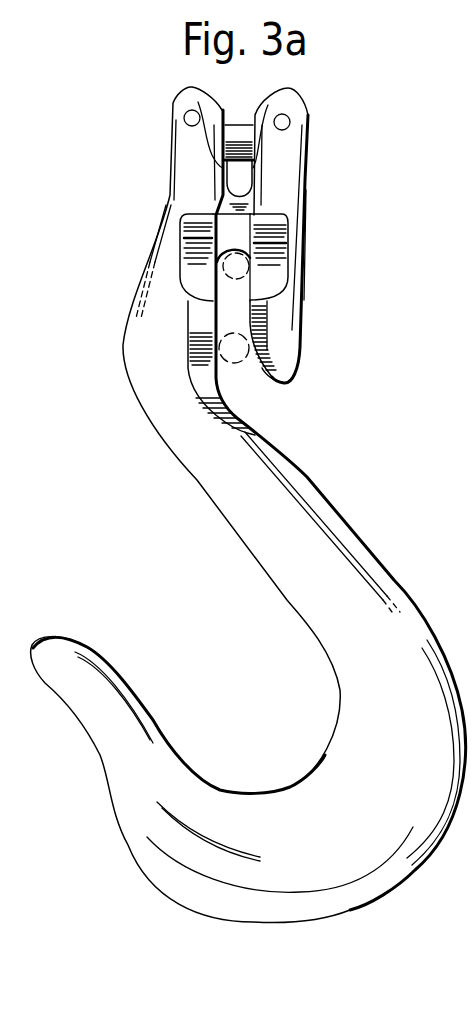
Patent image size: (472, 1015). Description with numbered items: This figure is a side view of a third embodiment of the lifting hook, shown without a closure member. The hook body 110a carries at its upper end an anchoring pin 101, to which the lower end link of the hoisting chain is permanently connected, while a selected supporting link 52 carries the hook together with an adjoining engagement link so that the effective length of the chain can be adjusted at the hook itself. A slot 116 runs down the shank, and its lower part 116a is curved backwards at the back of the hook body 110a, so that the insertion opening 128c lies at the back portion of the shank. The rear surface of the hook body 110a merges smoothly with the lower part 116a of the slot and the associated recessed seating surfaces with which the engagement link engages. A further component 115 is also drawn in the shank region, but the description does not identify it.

The anchoring pin 101 is at (238, 136).
The slot 116 is at (237, 180).
The slide block 115 is at (230, 218).
The supporting link 52 is at (305, 262).
The lower part of the slot 116a is at (252, 372).
The insertion opening 128c is at (256, 392).
The hook body 110a is at (322, 860).